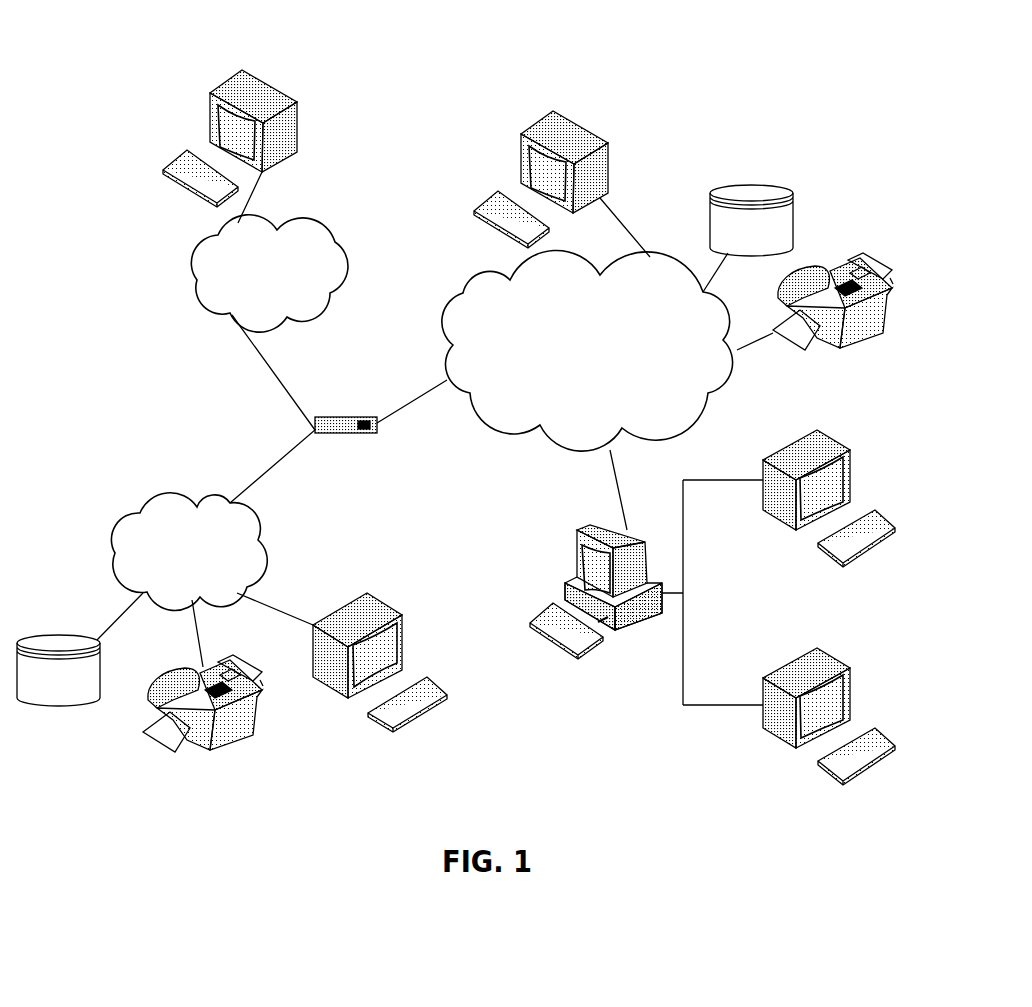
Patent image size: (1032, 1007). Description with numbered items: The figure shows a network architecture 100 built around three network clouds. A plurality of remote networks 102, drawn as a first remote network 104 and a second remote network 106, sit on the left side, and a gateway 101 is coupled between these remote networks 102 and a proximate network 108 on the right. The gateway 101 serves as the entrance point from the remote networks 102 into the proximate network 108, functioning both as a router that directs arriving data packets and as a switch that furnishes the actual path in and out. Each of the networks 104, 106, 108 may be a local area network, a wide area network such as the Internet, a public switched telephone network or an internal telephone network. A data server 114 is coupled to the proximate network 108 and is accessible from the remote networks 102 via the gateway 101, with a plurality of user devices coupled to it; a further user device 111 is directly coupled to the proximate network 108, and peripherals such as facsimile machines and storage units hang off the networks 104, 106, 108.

The architecture 100 is at (147, 55).
The gateway 101 is at (330, 415).
The remote networks 102 is at (177, 330).
The first remote network 104 is at (117, 523).
The second remote network 106 is at (335, 243).
The proximate network 108 is at (700, 418).
The user device 111 is at (606, 149).
The data server 114 is at (577, 545).